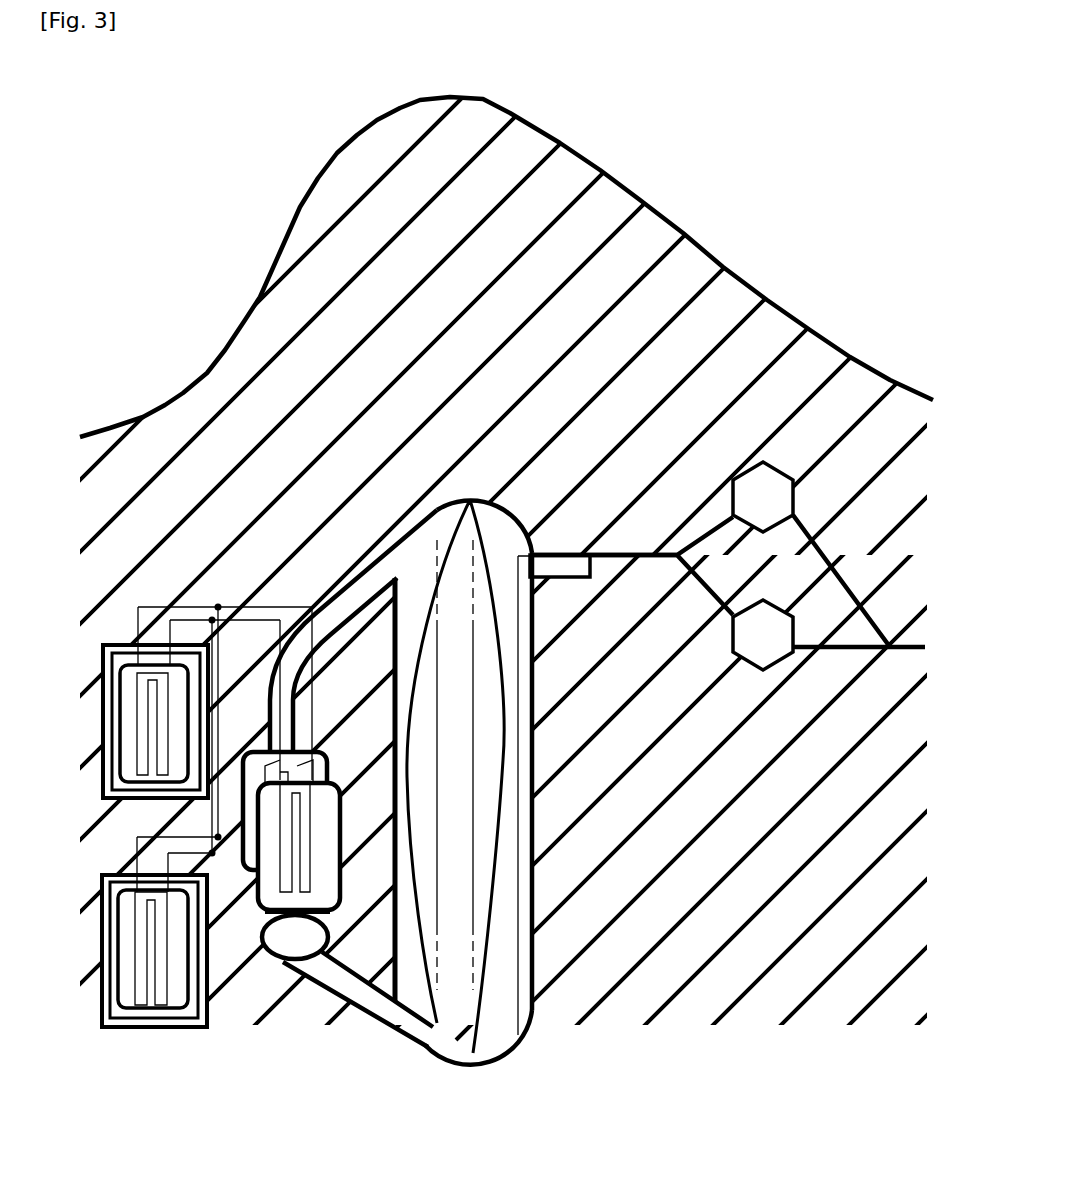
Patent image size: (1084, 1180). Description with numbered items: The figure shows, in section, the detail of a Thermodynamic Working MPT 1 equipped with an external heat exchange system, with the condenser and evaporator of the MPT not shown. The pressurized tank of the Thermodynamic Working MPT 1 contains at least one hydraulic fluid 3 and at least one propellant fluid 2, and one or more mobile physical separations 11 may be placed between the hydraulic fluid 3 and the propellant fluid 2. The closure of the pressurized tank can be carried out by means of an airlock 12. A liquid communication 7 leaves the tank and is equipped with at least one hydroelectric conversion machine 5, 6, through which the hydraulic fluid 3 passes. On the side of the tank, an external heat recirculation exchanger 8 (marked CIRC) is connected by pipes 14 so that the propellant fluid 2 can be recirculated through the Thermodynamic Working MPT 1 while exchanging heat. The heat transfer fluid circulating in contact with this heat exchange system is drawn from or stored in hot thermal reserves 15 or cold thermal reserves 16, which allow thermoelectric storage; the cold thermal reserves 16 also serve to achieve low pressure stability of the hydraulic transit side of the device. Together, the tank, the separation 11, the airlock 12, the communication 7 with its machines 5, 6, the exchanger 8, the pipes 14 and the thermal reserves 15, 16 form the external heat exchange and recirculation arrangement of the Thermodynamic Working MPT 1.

The Thermodynamic Working MPT 1 is at (520, 1035).
The propellant fluid 2 is at (487, 793).
The hydraulic fluid 3 is at (484, 1033).
The hydroelectric conversion machine 5 is at (766, 488).
The hydroelectric conversion machine 6 is at (770, 622).
The liquid communication 7 is at (617, 553).
The external heat recirculation exchanger 8 is at (255, 875).
The mobile physical separation 11 is at (565, 565).
The airlock 12 is at (497, 740).
The pipe 14 is at (397, 578).
The hot thermal reserve 15 is at (103, 800).
The cold thermal reserve 16 is at (157, 1022).